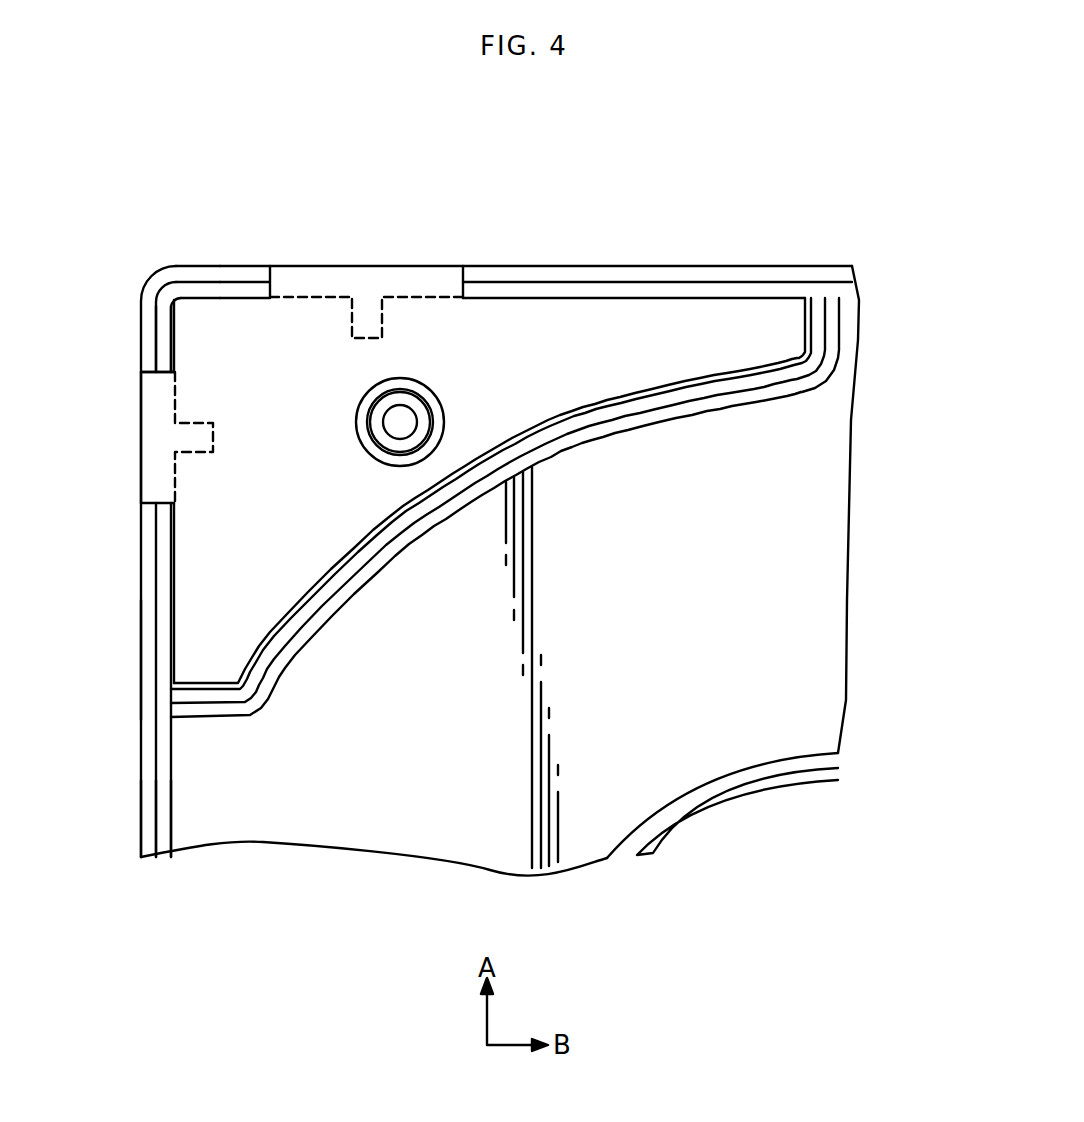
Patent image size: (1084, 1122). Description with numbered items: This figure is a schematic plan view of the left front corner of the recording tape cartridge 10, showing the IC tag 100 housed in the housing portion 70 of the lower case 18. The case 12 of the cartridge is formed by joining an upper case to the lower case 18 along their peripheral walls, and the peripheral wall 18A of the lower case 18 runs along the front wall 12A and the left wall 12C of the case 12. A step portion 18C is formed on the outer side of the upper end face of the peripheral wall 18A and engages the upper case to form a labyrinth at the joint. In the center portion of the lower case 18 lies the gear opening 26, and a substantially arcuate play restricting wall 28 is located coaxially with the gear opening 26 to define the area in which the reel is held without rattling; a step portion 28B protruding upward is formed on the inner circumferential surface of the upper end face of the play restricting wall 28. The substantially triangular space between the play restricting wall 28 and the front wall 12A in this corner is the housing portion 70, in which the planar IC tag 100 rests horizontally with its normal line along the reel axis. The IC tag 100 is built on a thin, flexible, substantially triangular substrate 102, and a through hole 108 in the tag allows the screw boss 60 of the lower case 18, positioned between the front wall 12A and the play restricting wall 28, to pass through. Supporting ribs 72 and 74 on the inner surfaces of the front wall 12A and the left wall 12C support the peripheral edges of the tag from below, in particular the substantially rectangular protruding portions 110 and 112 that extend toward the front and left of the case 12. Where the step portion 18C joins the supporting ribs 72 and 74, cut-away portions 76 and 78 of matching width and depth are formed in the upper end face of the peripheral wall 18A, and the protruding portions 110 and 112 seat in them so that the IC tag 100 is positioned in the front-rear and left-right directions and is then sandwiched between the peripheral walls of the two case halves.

The recording tape cartridge 10 is at (657, 178).
The case 12 is at (139, 554).
The front wall 12A is at (588, 267).
The left wall 12C is at (141, 660).
The lower case 18 is at (785, 267).
The peripheral wall 18A is at (858, 311).
The step portion 18C is at (703, 272).
The gear opening 26 is at (703, 782).
The play restricting wall 28 is at (585, 448).
The step portion 28B is at (308, 645).
The screw boss 60 is at (398, 423).
The housing portion 70 is at (207, 301).
The supporting rib 72 is at (352, 330).
The supporting rib 74 is at (198, 455).
The cut-away portion 76 is at (339, 251).
The cut-away portion 78 is at (145, 378).
The IC tag 100 is at (654, 354).
The substrate 102 is at (315, 545).
The through hole 108 is at (525, 394).
The protruding portion 110 is at (437, 272).
The protruding portion 112 is at (143, 445).